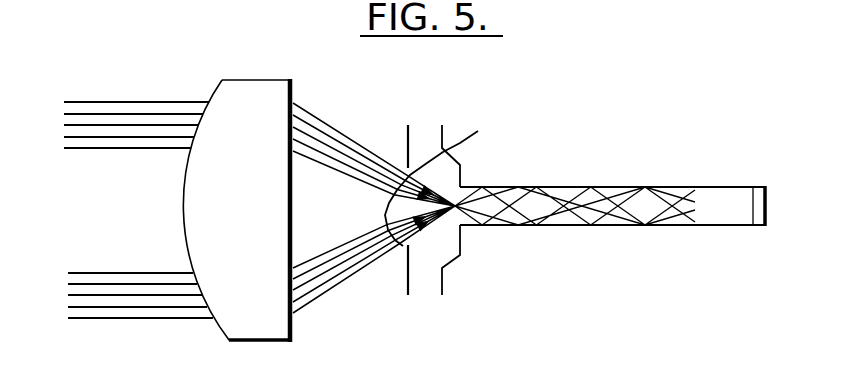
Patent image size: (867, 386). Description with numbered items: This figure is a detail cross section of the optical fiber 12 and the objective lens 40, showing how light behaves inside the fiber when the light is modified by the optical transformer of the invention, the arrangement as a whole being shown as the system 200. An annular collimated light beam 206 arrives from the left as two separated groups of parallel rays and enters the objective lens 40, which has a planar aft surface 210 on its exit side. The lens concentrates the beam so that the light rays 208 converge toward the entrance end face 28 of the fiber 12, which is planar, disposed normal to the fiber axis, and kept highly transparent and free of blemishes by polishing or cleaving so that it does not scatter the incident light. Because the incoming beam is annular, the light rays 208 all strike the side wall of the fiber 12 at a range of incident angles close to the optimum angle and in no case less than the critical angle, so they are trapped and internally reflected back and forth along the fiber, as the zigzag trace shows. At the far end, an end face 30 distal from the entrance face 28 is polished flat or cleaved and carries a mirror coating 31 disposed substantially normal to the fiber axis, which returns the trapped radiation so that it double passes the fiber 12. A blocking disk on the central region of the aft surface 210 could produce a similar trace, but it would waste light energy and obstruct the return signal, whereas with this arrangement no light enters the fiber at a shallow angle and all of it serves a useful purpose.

The optical coupling system 200 is at (105, 5).
The annular collimated light beam 206 is at (132, 102).
The objective lens 40 is at (240, 302).
The aft surface 210 is at (293, 225).
The end face 28 is at (384, 205).
The light rays 208 is at (411, 236).
The fiber 12 is at (717, 197).
The end face 30 is at (768, 190).
The mirror coating 31 is at (768, 212).